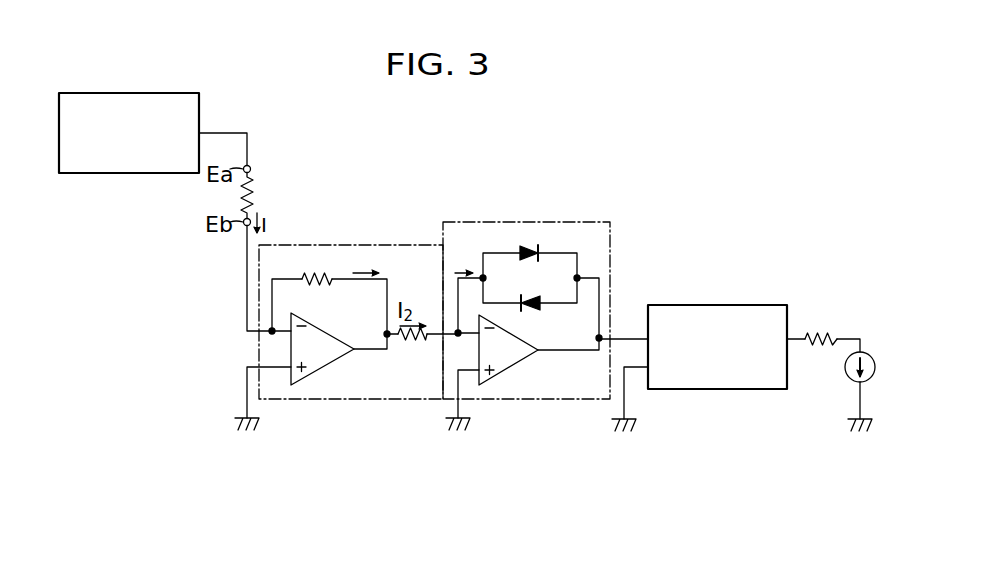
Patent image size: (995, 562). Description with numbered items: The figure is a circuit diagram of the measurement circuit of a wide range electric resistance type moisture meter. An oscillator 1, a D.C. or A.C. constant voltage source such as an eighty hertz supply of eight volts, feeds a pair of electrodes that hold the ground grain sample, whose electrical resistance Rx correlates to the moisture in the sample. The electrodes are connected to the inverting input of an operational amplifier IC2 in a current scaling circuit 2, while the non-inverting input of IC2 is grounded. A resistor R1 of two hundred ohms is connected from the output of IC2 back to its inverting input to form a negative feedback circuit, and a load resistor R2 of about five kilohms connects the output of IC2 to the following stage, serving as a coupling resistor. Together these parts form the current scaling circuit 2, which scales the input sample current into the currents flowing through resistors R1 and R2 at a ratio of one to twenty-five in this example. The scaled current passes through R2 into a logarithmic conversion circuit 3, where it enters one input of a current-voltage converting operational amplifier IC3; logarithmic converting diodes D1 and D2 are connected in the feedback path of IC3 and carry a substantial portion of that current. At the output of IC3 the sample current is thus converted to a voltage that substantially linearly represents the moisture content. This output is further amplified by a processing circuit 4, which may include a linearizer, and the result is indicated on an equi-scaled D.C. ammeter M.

The oscillator 1 is at (100, 175).
The current scaling circuit 2 is at (339, 375).
The logarithmic conversion circuit 3 is at (526, 363).
The processing circuit 4 is at (735, 305).
The electrical resistance of the sample Rx is at (253, 193).
The resistor R1 is at (323, 274).
The load resistor R2 is at (418, 341).
The operational amplifier IC2 is at (322, 349).
The current-voltage converting operational amplifier IC3 is at (508, 350).
The logarithmic converting diode D1 is at (533, 258).
The logarithmic converting diode D2 is at (533, 308).
The D.C. ammeter M is at (893, 358).